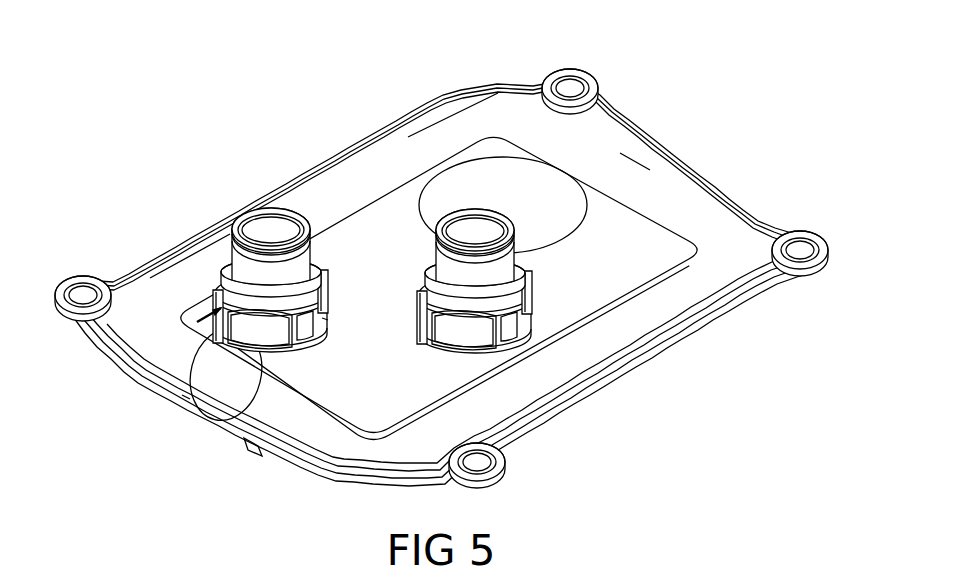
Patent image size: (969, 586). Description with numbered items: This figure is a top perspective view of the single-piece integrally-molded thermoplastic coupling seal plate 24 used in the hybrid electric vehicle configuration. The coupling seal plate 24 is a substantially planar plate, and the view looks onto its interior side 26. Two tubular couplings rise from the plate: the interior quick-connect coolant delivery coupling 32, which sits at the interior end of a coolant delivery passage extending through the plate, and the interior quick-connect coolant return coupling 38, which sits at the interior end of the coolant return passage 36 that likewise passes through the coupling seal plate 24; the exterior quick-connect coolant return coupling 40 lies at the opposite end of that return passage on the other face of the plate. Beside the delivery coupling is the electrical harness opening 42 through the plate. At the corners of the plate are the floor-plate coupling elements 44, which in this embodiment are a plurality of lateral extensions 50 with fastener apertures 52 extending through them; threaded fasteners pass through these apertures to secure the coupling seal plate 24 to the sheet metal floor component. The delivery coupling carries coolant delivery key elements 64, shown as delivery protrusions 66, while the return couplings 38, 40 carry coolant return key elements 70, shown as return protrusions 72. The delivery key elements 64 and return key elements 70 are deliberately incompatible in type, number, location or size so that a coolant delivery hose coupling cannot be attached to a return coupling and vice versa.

The single-piece integrally-molded thermoplastic coupling seal plate 24 is at (248, 133).
The interior side 26 is at (362, 403).
The interior quick-connect coolant delivery coupling 32 is at (513, 280).
The coolant return passage 36 is at (230, 422).
The interior quick-connect coolant return coupling 38 is at (248, 272).
The exterior quick-connect coolant return coupling 40 is at (250, 446).
The electrical harness opening 42 is at (522, 190).
The floor-plate coupling elements 44 is at (600, 68).
The lateral extensions 50 is at (807, 227).
The fastener apertures 52 is at (800, 243).
The coolant delivery key elements 64 is at (543, 285).
The delivery protrusions 66 is at (530, 308).
The coolant return key elements 70 is at (333, 283).
The return protrusions 72 is at (322, 316).